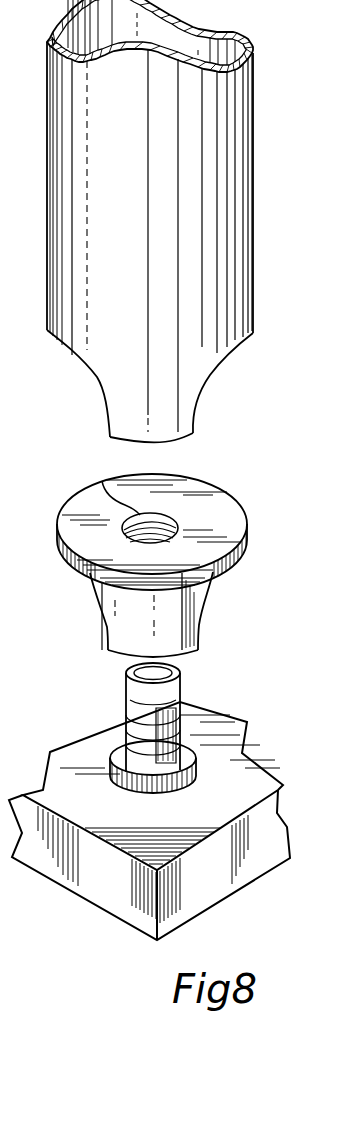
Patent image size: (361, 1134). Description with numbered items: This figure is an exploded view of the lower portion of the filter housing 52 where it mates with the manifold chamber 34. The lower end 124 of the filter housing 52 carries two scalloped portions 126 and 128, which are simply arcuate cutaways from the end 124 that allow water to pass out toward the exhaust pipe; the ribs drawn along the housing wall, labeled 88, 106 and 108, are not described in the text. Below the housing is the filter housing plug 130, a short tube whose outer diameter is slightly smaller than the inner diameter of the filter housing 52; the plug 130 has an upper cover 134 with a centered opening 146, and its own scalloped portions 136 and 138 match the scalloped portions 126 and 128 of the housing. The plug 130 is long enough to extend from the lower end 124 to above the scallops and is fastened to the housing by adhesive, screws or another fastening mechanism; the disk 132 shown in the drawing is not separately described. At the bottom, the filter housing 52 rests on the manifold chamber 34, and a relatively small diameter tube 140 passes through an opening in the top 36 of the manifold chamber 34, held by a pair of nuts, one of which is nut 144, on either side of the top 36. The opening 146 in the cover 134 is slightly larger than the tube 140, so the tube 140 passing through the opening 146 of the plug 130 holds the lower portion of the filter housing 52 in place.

The manifold chamber 34 is at (145, 821).
The top of manifold chamber 36 is at (72, 765).
The filter housing 52 is at (245, 297).
The rib 88 is at (0, 218).
The rib 106 is at (10, 281).
The rib 108 is at (10, 174).
The lower end of filter housing 124 is at (178, 441).
The scalloped portion 126 is at (211, 372).
The scalloped portion 128 is at (92, 374).
The filter housing plug 130 is at (145, 558).
The disk 132 is at (56, 542).
The upper cover 134 is at (233, 512).
The scalloped portion of plug 136 is at (207, 598).
The scalloped portion of plug 138 is at (93, 600).
The tube 140 is at (125, 708).
The nut 144 is at (196, 759).
The opening 146 is at (102, 481).